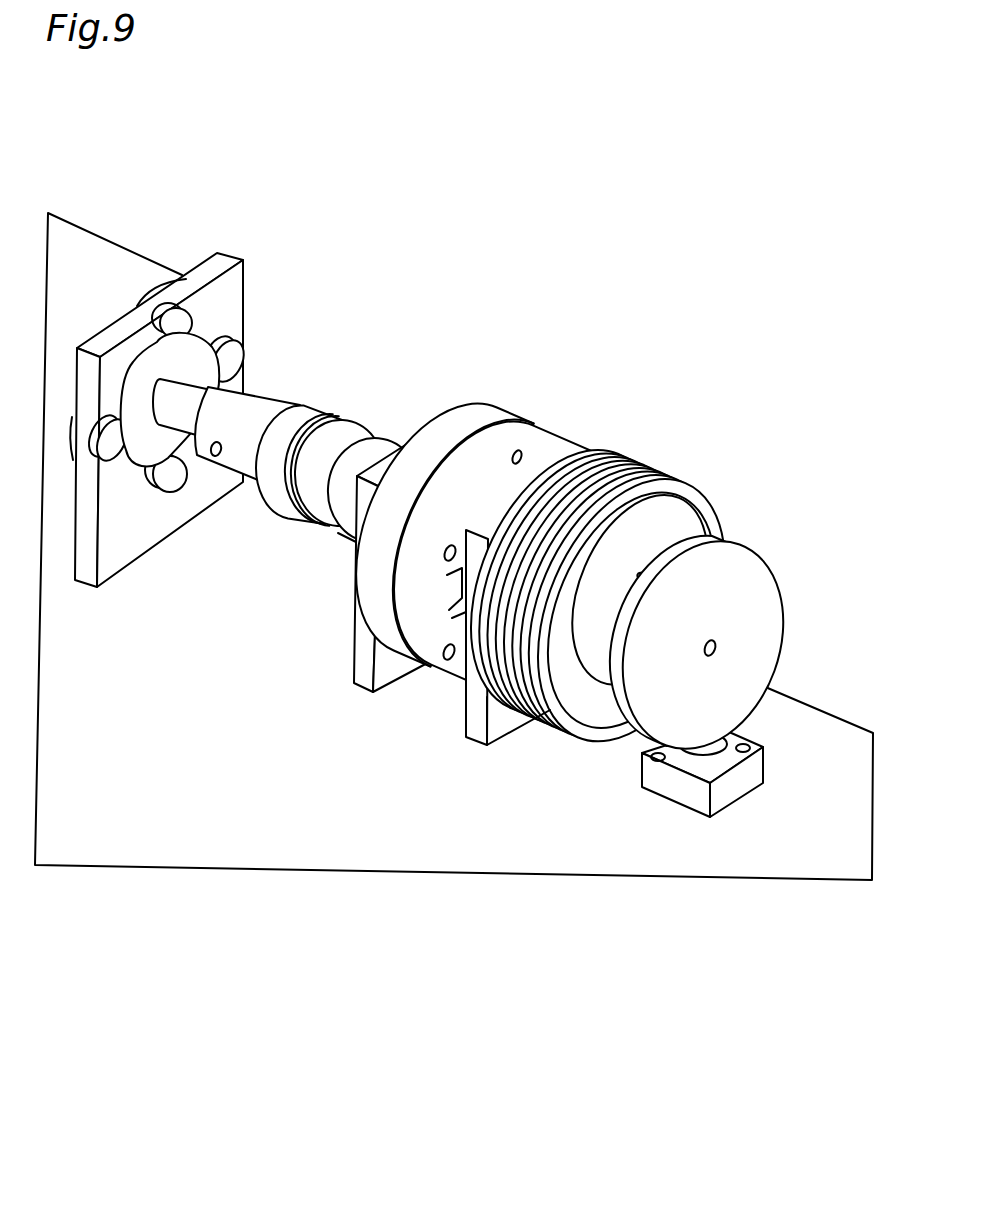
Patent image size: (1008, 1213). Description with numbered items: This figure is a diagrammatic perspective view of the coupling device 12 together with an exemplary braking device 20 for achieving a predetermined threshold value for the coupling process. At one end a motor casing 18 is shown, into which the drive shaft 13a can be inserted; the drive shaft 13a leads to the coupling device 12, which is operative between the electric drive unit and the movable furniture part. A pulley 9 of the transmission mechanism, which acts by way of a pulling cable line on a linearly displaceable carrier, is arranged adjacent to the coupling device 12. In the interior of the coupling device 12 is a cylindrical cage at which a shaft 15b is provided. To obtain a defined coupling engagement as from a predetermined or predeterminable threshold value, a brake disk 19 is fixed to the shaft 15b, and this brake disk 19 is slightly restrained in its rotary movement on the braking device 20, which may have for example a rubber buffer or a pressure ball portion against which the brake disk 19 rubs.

The motor casing 18 is at (217, 263).
The drive shaft 13a is at (190, 397).
The coupling device 12 is at (518, 428).
The pulley 9 is at (625, 455).
The brake disk 19 is at (727, 540).
The shaft 15b is at (718, 645).
The braking device 20 is at (668, 822).